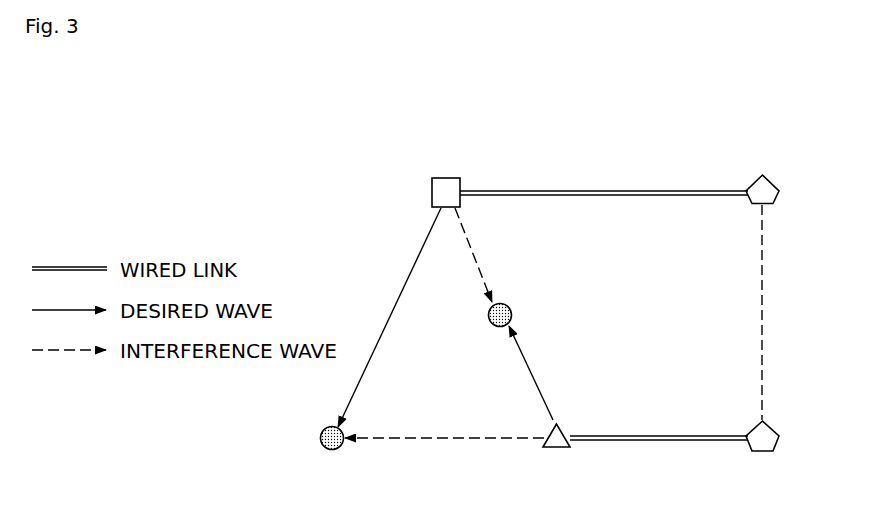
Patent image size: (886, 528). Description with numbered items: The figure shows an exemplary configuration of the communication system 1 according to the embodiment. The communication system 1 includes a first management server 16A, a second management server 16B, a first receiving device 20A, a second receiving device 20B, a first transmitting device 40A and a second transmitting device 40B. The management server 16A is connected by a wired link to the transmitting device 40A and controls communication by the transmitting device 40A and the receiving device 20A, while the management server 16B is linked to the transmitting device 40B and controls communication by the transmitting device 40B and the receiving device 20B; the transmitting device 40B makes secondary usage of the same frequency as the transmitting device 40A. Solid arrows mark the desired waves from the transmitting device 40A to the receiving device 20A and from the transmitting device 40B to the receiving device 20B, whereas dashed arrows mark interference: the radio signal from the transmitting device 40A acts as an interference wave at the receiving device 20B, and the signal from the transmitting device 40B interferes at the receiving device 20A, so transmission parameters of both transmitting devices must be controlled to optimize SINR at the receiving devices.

The communication system 1 is at (292, 76).
The first transmitting device 40A is at (442, 177).
The second transmitting device 40B is at (556, 448).
The first management server 16A is at (779, 195).
The second management server 16B is at (779, 440).
The first receiving device 20A is at (332, 450).
The second receiving device 20B is at (512, 314).